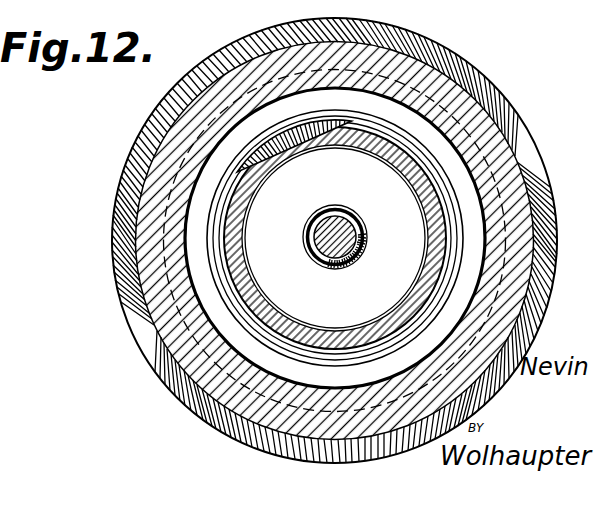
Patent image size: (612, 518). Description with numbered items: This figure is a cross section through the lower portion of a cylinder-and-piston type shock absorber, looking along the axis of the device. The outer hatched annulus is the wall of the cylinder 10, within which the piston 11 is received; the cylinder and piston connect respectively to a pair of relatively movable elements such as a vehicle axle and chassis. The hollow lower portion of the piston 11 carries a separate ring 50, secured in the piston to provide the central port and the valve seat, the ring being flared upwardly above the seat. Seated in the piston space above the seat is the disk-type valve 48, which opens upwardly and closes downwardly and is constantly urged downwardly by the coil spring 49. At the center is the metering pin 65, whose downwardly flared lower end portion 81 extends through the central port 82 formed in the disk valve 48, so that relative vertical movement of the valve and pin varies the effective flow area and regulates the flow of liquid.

The cylinder 10 is at (522, 152).
The piston 11 is at (518, 248).
The valve 48 is at (327, 325).
The coil spring 49 is at (450, 218).
The ring 50 is at (195, 238).
The metering pin 65 is at (330, 218).
The flared lower end portion of the metering pin 81 is at (360, 248).
The central port 82 is at (310, 260).